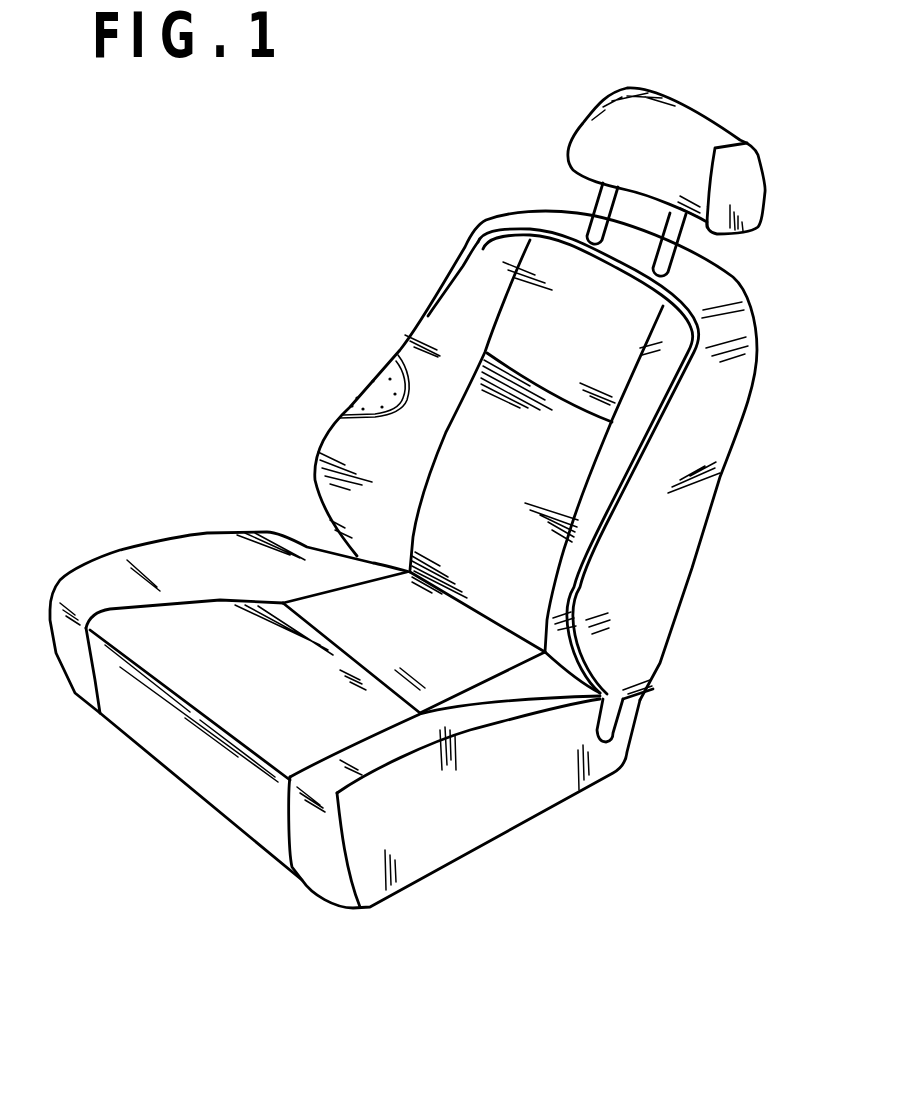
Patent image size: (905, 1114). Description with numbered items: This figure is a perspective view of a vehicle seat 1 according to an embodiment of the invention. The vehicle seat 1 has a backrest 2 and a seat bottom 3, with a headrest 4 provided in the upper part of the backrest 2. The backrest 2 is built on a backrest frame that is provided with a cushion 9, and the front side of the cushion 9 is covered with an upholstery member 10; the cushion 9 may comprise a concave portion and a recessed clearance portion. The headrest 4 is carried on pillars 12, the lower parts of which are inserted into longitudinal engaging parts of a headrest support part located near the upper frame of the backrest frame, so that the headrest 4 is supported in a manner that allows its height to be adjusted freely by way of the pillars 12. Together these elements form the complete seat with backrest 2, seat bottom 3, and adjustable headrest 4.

The vehicle seat 1 is at (713, 576).
The backrest 2 is at (720, 452).
The seat bottom 3 is at (493, 800).
The headrest 4 is at (687, 118).
The cushion 9 is at (377, 400).
The upholstery member 10 is at (345, 437).
The pillars 12 is at (595, 200).